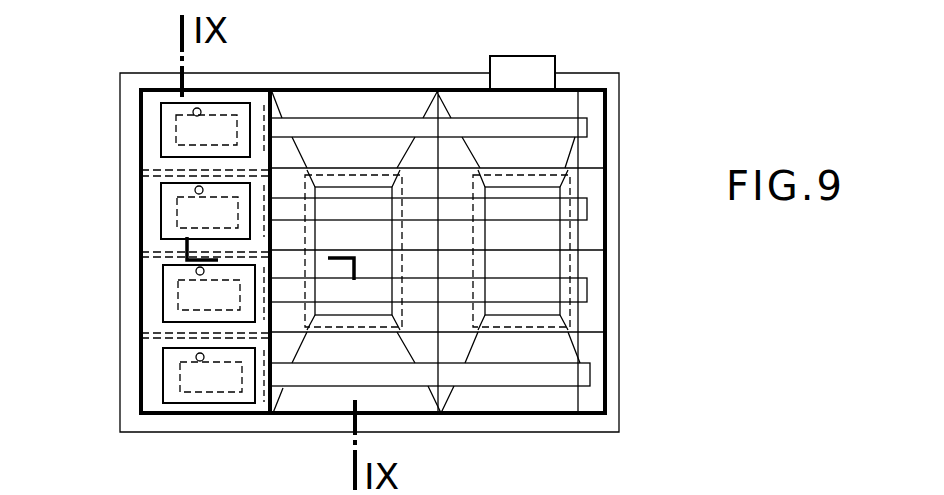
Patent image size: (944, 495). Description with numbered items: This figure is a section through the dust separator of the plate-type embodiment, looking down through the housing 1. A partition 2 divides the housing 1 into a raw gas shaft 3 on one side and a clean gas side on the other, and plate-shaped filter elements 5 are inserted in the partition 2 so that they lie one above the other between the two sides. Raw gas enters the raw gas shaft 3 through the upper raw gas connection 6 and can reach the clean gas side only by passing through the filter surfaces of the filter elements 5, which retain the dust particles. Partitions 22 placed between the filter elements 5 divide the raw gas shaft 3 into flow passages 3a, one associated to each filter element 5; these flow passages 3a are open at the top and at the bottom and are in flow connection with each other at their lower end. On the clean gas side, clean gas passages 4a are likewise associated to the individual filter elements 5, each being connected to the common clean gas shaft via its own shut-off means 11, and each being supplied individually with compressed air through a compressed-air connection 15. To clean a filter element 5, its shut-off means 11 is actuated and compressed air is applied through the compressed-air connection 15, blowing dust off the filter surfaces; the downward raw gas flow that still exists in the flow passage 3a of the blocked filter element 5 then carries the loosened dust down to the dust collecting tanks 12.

The housing 1 is at (612, 383).
The partition 2 is at (275, 103).
The raw gas shaft 3 is at (579, 150).
The flow passage 3a is at (418, 103).
The clean gas passage 4a is at (152, 113).
The filter element 5 is at (343, 212).
The raw gas connection 6 is at (525, 73).
The shut-off means 11 is at (167, 207).
The dust collecting tank 12 is at (530, 230).
The compressed-air connection 15 is at (200, 188).
The partition 22 is at (530, 168).